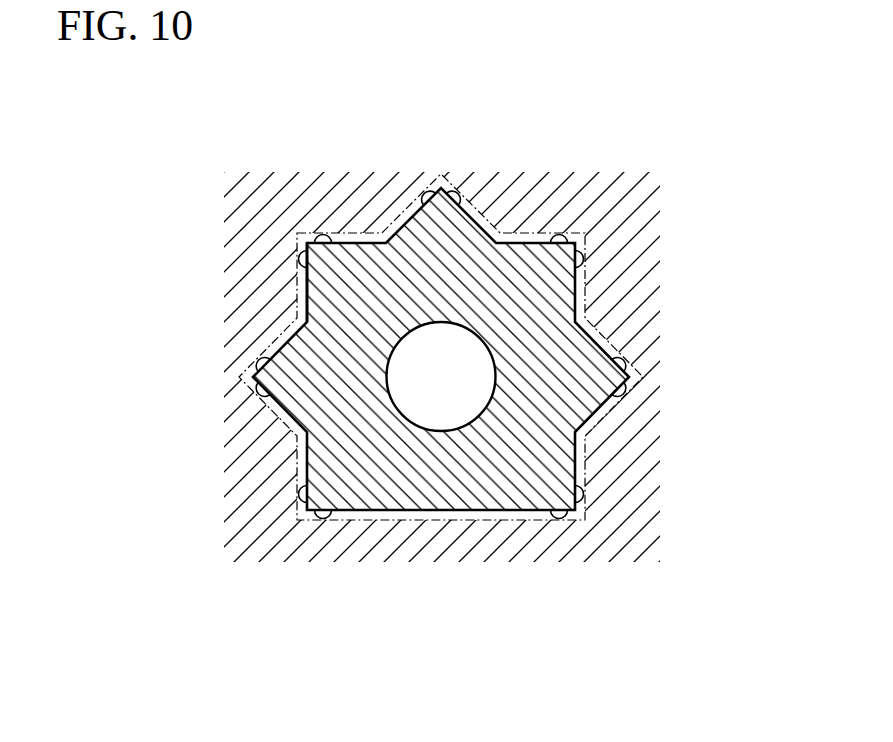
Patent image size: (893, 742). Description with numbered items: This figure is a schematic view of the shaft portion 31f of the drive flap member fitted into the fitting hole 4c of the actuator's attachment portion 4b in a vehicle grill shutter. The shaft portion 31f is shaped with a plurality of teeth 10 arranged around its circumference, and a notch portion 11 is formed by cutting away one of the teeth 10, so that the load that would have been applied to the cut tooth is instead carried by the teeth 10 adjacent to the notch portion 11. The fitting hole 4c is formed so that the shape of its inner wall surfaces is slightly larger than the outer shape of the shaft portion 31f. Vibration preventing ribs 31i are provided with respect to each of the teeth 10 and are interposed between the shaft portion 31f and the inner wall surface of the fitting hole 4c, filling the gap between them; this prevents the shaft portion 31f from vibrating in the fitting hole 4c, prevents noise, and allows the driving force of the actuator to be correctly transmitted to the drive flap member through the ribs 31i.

The attachment portion 4b is at (553, 183).
The fitting hole 4c is at (352, 232).
The teeth 10 is at (333, 257).
The notch portion 11 is at (447, 513).
The shaft portion 31f is at (300, 302).
The vibration preventing rib 31i is at (321, 233).